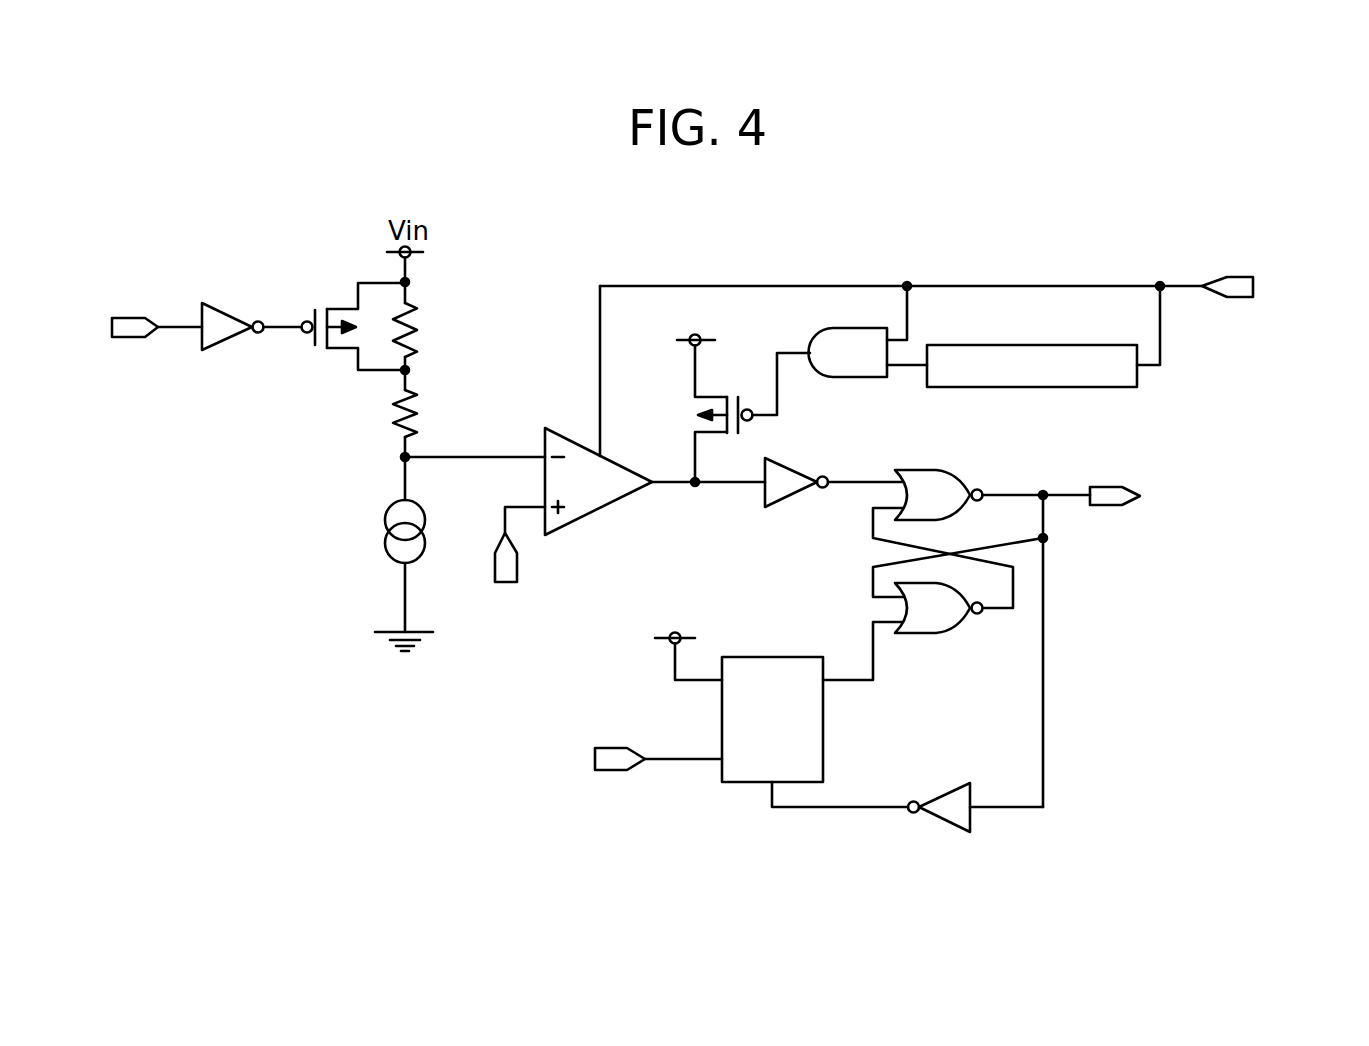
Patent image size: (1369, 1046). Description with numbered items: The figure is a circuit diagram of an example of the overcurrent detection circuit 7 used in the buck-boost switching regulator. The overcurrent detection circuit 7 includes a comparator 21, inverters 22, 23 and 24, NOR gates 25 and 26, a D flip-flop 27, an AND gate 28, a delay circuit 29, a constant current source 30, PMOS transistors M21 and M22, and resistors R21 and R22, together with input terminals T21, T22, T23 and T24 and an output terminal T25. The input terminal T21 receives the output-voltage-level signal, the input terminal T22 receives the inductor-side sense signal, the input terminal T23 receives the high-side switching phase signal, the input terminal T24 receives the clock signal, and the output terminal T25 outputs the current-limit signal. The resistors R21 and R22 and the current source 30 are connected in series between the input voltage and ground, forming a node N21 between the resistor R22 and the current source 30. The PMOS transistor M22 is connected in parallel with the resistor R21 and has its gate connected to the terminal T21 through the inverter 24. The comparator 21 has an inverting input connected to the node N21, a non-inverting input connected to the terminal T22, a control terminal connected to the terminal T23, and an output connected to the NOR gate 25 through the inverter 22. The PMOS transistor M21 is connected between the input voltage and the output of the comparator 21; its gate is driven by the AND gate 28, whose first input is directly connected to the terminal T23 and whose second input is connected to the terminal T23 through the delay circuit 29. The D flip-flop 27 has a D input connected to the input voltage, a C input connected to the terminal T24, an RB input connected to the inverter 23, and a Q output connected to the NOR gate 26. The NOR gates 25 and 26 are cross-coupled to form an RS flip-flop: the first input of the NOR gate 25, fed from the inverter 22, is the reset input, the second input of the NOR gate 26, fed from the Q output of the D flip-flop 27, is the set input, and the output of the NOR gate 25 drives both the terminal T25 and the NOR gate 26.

The overcurrent detection circuit 7 is at (992, 232).
The comparator 21 is at (610, 508).
The inverter 22 is at (793, 498).
The inverter 23 is at (947, 790).
The inverter 24 is at (230, 316).
The NOR gate 25 is at (923, 468).
The NOR gate 26 is at (925, 638).
The D flip-flop 27 is at (773, 654).
The AND gate 28 is at (863, 379).
The delay circuit 29 is at (1067, 388).
The constant current source 30 is at (388, 531).
The input terminal T21 is at (132, 317).
The input terminal T22 is at (521, 560).
The input terminal T23 is at (1248, 259).
The input terminal T24 is at (615, 746).
The output terminal T25 is at (1108, 507).
The node N21 is at (400, 460).
The PMOS transistor M21 is at (743, 393).
The PMOS transistor M22 is at (351, 324).
The resistor R21 is at (434, 330).
The resistor R22 is at (434, 413).